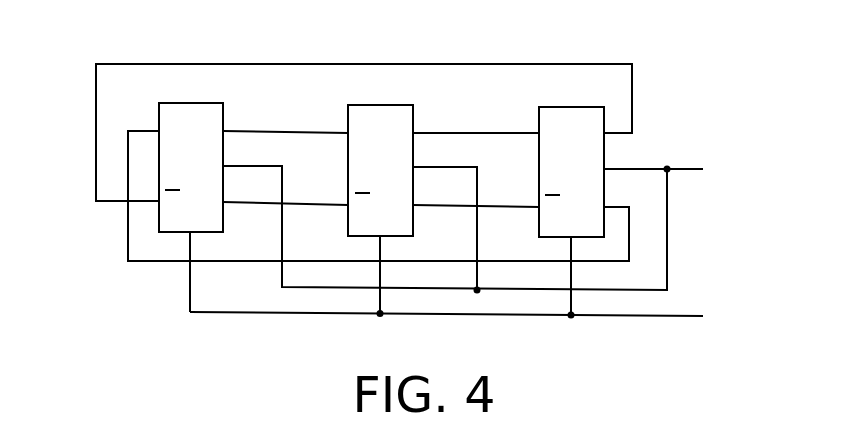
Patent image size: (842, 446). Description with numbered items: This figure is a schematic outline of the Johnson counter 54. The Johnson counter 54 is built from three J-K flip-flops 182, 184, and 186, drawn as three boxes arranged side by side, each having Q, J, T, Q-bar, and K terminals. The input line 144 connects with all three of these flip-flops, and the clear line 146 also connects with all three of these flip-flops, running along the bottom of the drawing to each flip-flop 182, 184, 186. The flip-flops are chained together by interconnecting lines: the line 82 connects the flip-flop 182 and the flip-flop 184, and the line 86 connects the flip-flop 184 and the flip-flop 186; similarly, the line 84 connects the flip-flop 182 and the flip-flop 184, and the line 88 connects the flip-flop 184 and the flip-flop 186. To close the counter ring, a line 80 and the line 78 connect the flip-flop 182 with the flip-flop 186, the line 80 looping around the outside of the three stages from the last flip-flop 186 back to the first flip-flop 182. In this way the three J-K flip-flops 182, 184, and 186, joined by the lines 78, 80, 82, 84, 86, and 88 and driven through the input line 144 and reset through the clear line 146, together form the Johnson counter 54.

The Johnson counter 54 is at (255, 55).
The line 78 is at (141, 130).
The line 80 is at (96, 188).
The line 82 is at (307, 130).
The line 84 is at (253, 203).
The line 86 is at (500, 132).
The line 88 is at (455, 206).
The input line 144 is at (695, 166).
The clear line 146 is at (626, 321).
The J-K flip-flop 182 is at (218, 102).
The J-K flip-flop 184 is at (379, 104).
The J-K flip-flop 186 is at (598, 106).